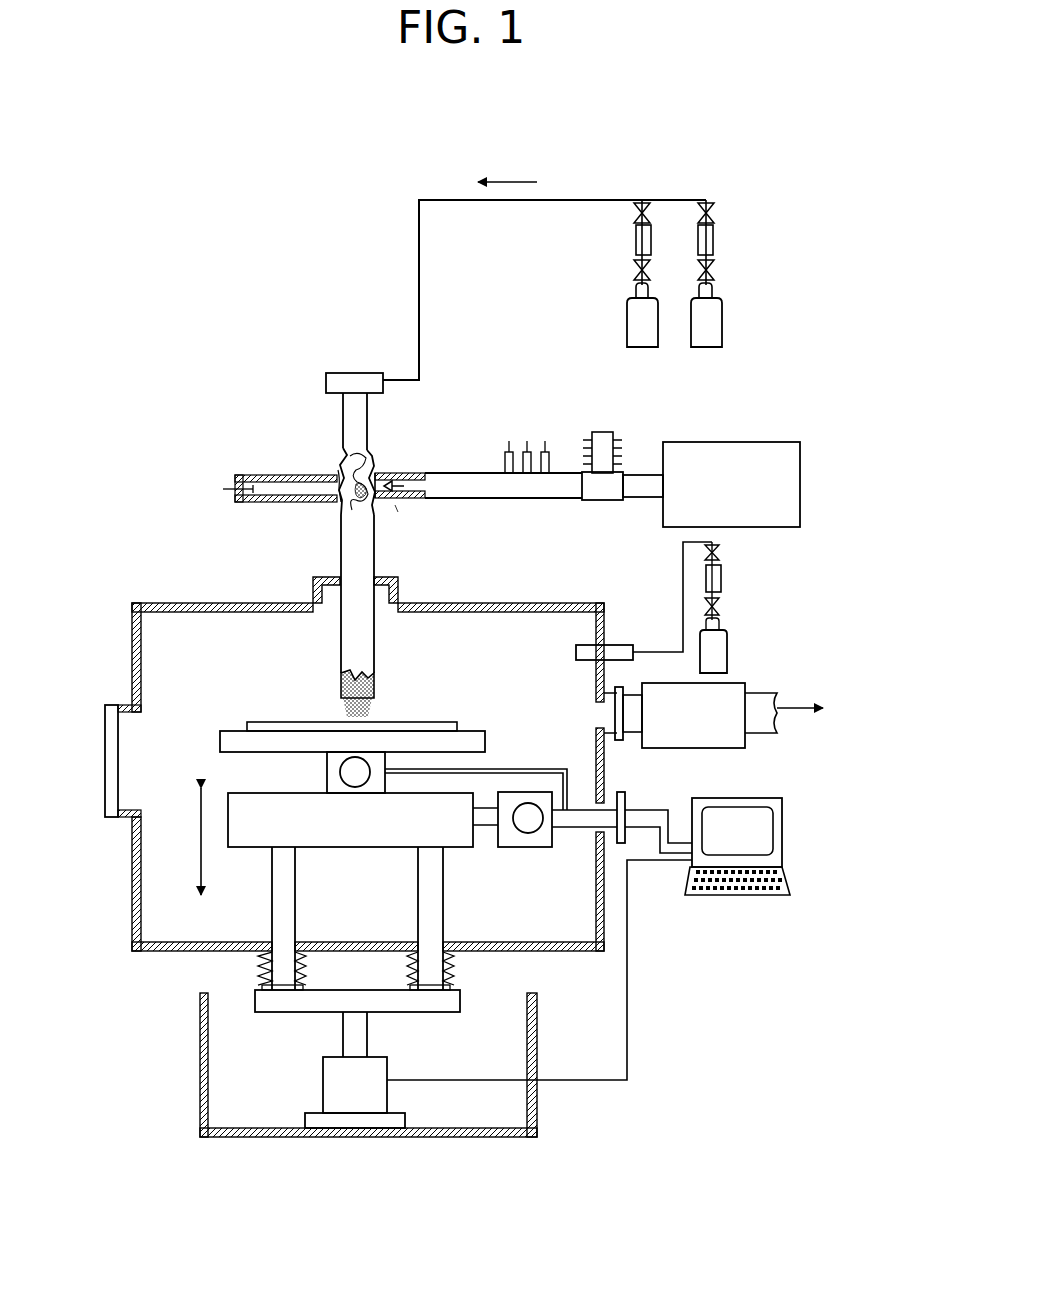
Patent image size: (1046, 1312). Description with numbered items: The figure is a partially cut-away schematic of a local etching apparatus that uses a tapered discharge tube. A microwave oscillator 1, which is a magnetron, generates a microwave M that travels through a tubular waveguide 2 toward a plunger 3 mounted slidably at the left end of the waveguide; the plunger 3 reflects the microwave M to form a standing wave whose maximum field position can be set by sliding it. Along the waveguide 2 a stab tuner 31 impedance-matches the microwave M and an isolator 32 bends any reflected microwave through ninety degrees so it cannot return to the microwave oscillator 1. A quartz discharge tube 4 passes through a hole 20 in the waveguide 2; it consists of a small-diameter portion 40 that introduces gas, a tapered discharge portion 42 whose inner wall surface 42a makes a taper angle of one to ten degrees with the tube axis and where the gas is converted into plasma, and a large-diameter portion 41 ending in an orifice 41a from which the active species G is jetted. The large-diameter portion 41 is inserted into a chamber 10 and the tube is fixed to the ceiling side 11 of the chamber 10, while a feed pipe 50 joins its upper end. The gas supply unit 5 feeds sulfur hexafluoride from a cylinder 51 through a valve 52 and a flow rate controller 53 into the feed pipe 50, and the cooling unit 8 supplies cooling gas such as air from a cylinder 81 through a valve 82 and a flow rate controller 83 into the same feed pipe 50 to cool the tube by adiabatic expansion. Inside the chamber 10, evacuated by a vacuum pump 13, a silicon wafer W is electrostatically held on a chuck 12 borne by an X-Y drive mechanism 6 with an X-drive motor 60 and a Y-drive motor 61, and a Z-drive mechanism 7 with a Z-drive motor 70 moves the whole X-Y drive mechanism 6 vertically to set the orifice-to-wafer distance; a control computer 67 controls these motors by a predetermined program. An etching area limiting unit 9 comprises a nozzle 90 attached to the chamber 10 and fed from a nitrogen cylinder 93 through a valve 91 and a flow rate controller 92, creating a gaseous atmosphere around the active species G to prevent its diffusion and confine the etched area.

The microwave oscillator 1 is at (748, 442).
The waveguide 2 is at (519, 436).
The plunger 3 is at (270, 484).
The quartz discharge tube 4 is at (355, 373).
The gas supply unit 5 is at (743, 209).
The X-Y drive mechanism 6 is at (371, 881).
The Z-drive mechanism 7 is at (368, 1090).
The cooling unit 8 is at (609, 210).
The etching area limiting unit 9 is at (729, 603).
The chamber 10 is at (132, 656).
The ceiling side 11 is at (452, 603).
The chuck 12 is at (220, 745).
The vacuum pump 13 is at (693, 740).
The hole 20 is at (340, 473).
The stab tuner 31 is at (548, 452).
The isolator 32 is at (610, 432).
The small-diameter portion 40 is at (347, 427).
The large-diameter portion 41 is at (365, 560).
The orifice 41a is at (375, 705).
The discharge portion 42 is at (403, 445).
The inner wall surface 42a is at (368, 477).
The feed pipe 50 is at (420, 293).
The cylinder 51 is at (725, 312).
The valve 52 is at (714, 205).
The flow rate controller 53 is at (714, 238).
The X-drive motor 60 is at (352, 772).
The Y-drive motor 61 is at (524, 826).
The control computer 67 is at (725, 797).
The Z-drive motor 70 is at (352, 1085).
The cylinder 81 is at (627, 325).
The valve 82 is at (634, 210).
The flow rate controller 83 is at (636, 245).
The nozzle 90 is at (622, 645).
The valve 91 is at (718, 552).
The flow rate controller 92 is at (721, 580).
The N2 cylinder 93 is at (727, 648).
The active species G is at (345, 715).
The silicon wafer W is at (458, 720).
The microwave M is at (404, 519).